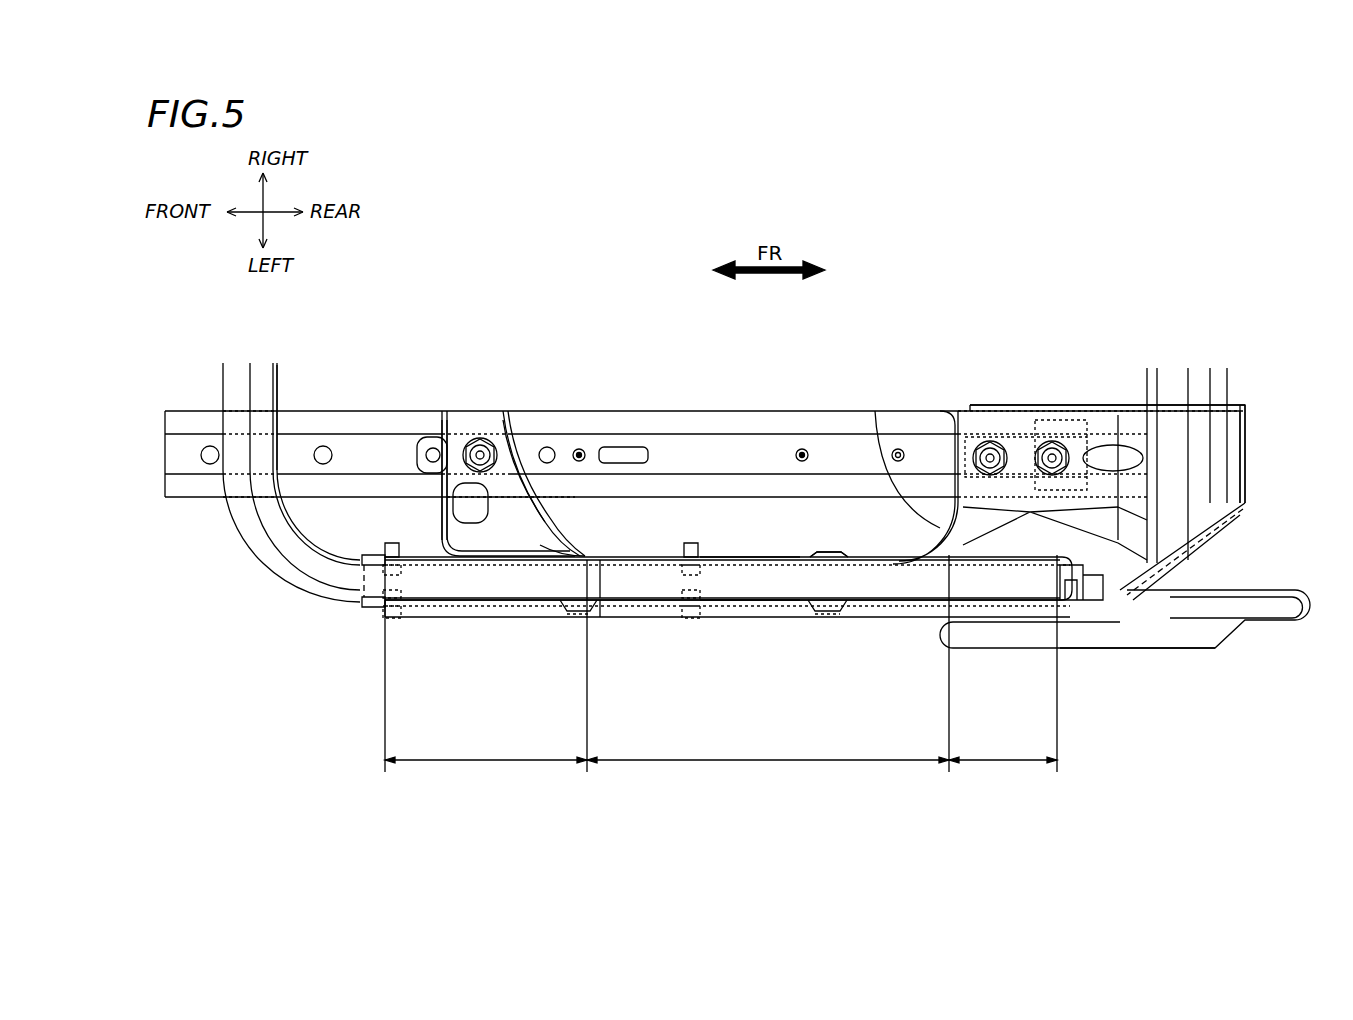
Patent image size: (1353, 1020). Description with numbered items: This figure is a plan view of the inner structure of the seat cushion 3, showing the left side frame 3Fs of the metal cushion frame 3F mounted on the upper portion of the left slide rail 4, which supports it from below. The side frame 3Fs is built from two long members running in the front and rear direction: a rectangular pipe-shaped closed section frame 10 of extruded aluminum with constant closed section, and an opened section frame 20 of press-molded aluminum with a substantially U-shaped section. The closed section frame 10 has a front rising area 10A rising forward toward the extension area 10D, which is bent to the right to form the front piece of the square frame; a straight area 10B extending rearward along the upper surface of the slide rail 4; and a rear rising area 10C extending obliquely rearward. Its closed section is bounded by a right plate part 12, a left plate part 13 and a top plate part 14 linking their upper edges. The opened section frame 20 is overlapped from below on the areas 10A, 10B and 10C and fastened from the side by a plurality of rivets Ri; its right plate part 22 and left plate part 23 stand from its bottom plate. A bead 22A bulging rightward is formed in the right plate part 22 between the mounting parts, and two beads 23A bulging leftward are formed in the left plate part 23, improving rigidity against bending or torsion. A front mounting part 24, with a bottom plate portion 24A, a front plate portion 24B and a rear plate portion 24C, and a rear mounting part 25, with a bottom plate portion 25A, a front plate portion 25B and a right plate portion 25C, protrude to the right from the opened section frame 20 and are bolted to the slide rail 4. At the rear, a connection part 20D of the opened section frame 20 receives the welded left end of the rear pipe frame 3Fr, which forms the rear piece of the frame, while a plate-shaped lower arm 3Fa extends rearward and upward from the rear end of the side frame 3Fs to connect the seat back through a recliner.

The seat cushion 3 is at (525, 292).
The cushion frame 3F is at (275, 567).
The rear pipe frame 3Fr is at (1207, 382).
The lower arm 3Fa is at (1175, 650).
The side frame 3Fs is at (507, 690).
The slide rail 4 is at (203, 408).
The closed section frame 10 is at (450, 585).
The front rising area 10A is at (503, 755).
The straight area 10B is at (785, 757).
The rear rising area 10C is at (1020, 757).
The extension area 10D is at (265, 383).
The right plate part 12 is at (540, 550).
The left plate part 13 is at (641, 575).
The top plate part 14 is at (640, 580).
The opened section frame 20 is at (505, 609).
The connection part 20D is at (1237, 447).
The right plate part 22 is at (755, 557).
The bead 22A is at (824, 552).
The left plate part 23 is at (760, 602).
The beads 23A is at (578, 614).
The front mounting part 24 is at (487, 424).
The bottom plate portion 24A is at (460, 440).
The front plate portion 24B is at (440, 428).
The rear plate portion 24C is at (515, 428).
The rear mounting part 25 is at (1105, 422).
The bottom plate portion 25A is at (880, 437).
The front plate portion 25B is at (946, 420).
The right plate portion 25C is at (1073, 405).
The rivets Ri is at (383, 618).